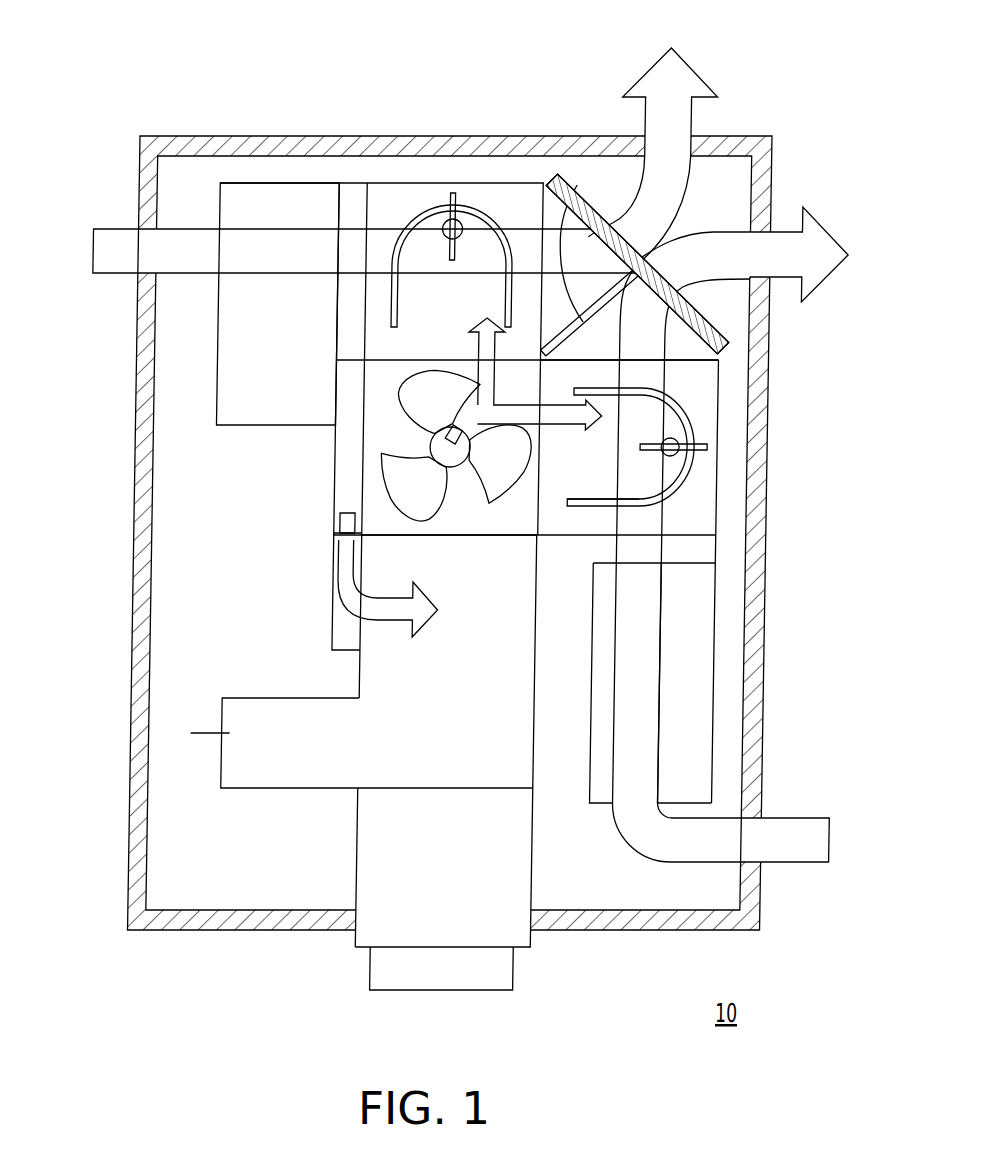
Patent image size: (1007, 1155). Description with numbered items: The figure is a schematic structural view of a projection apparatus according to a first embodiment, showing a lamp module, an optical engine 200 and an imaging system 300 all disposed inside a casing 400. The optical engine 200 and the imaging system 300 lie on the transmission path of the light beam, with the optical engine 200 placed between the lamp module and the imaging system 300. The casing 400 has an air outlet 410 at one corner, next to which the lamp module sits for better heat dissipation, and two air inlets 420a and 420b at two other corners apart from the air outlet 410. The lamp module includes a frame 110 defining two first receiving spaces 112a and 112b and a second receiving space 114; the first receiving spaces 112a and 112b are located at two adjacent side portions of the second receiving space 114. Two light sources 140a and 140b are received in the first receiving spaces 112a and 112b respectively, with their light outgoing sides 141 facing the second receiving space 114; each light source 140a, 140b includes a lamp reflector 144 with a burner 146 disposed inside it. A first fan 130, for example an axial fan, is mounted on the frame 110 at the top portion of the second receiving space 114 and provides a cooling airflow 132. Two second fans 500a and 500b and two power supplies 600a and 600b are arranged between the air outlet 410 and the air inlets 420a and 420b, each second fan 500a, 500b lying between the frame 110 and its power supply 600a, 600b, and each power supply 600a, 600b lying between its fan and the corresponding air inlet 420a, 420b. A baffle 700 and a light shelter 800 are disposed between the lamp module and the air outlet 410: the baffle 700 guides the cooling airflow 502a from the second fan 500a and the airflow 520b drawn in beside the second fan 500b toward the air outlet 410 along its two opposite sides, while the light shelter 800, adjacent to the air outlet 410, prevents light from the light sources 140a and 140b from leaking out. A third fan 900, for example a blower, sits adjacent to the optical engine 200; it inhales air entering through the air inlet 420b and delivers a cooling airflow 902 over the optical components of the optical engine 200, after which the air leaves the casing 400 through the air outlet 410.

The frame 110 is at (722, 483).
The first receiving space 112a is at (715, 393).
The first receiving space 112b is at (503, 200).
The second receiving space 114 is at (403, 442).
The first fan 130 is at (524, 468).
The cooling airflow 132 is at (624, 340).
The light source 140a is at (822, 384).
The light source 140b is at (422, 36).
The light outgoing side 141 is at (431, 312).
The lamp reflector 144 is at (462, 222).
The burner 146 is at (445, 226).
The optical engine 200 is at (239, 733).
The imaging system 300 is at (522, 892).
The casing 400 is at (180, 922).
The air outlet 410 is at (712, 128).
The air inlet 420a is at (777, 755).
The air inlet 420b is at (132, 212).
The second fan 500a is at (722, 546).
The second fan 500b is at (353, 183).
The cooling airflow 502a is at (806, 867).
The duct inlet 520b is at (92, 250).
The power supply 600a is at (722, 690).
The power supply 600b is at (273, 183).
The baffle 700 is at (578, 171).
The light shelter 800 is at (580, 226).
The third fan 900 is at (344, 615).
The cooling airflow 902 is at (398, 632).